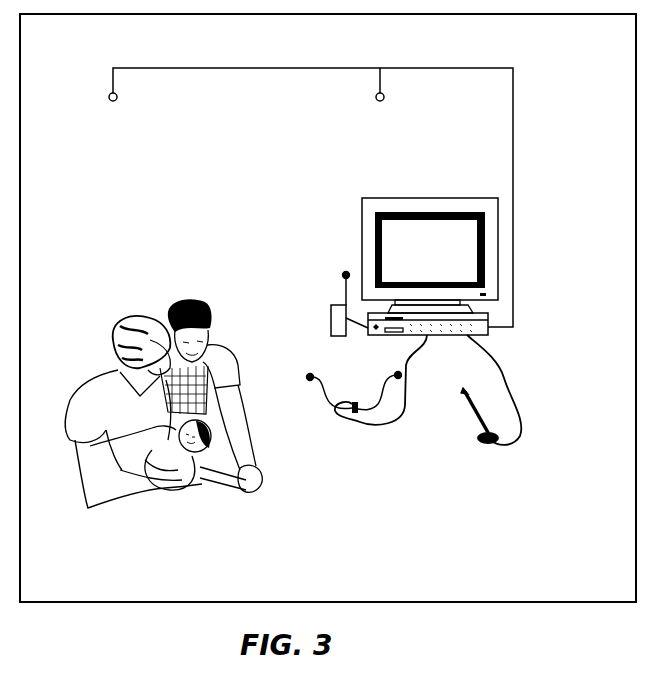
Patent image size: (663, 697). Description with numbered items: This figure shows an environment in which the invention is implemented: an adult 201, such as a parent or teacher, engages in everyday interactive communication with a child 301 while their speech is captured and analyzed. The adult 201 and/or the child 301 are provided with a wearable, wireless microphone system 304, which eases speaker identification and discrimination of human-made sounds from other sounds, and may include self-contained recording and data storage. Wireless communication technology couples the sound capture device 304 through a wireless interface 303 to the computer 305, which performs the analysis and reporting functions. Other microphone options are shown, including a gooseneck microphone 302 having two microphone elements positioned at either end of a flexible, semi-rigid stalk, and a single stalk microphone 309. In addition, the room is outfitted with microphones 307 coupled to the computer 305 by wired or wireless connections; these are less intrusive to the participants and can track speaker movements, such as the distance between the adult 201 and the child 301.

The adult 201 is at (193, 300).
The child 301 is at (118, 503).
The gooseneck microphone 302 is at (351, 399).
The wireless interface 303 is at (330, 322).
The wearable wireless microphone system 304 is at (212, 490).
The computer 305 is at (360, 238).
The microphones 307 is at (110, 104).
The single stalk microphone 309 is at (503, 450).